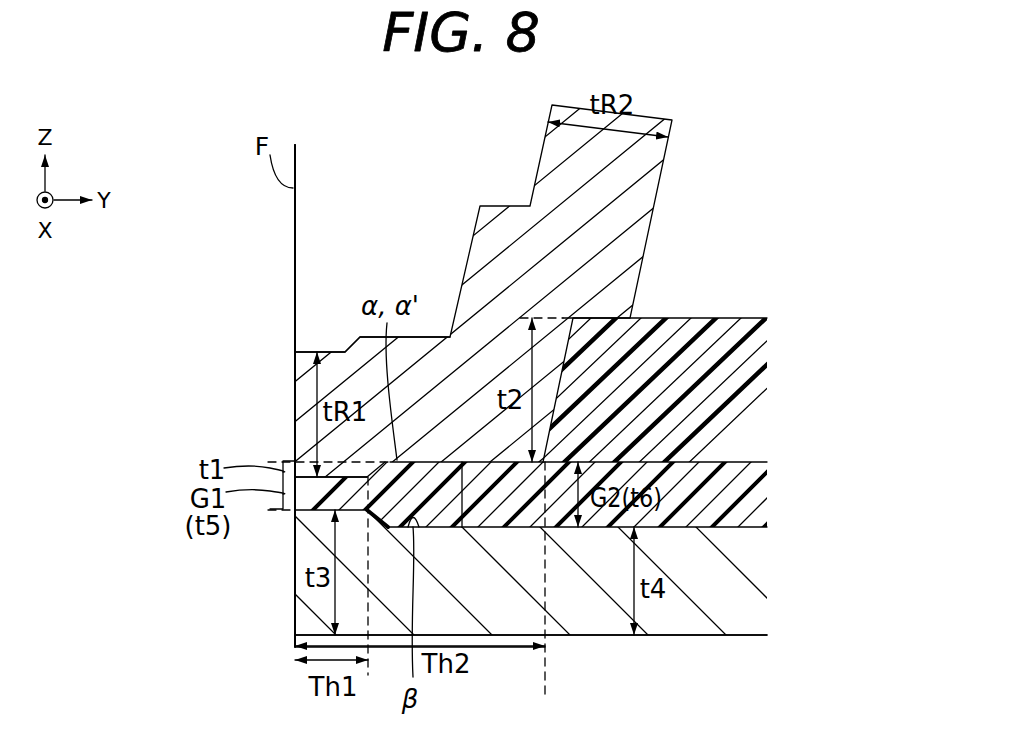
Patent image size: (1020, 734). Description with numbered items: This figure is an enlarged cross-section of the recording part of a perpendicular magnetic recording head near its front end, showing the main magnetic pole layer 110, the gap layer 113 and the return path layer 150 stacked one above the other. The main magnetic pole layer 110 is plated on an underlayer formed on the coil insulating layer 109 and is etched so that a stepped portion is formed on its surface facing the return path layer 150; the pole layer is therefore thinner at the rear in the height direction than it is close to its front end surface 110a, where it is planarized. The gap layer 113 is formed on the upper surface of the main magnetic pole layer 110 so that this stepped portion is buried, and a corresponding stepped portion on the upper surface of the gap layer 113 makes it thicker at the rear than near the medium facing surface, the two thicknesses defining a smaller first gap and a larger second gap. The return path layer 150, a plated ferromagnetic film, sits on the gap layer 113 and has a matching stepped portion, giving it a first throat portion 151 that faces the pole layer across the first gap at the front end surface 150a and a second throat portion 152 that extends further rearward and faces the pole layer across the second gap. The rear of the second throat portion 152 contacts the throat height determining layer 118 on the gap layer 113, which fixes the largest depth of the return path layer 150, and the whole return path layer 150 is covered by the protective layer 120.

The protective layer 120 is at (314, 251).
The return path layer 150 is at (627, 238).
The front end surface 150a is at (294, 385).
The throat height determining layer 118 is at (733, 327).
The gap layer 113 is at (748, 500).
The main magnetic pole layer 110 is at (748, 576).
The coil insulating layer 109 is at (748, 641).
The front end surface 110a is at (295, 580).
The first throat portion 151 is at (340, 478).
The second throat portion 152 is at (470, 440).